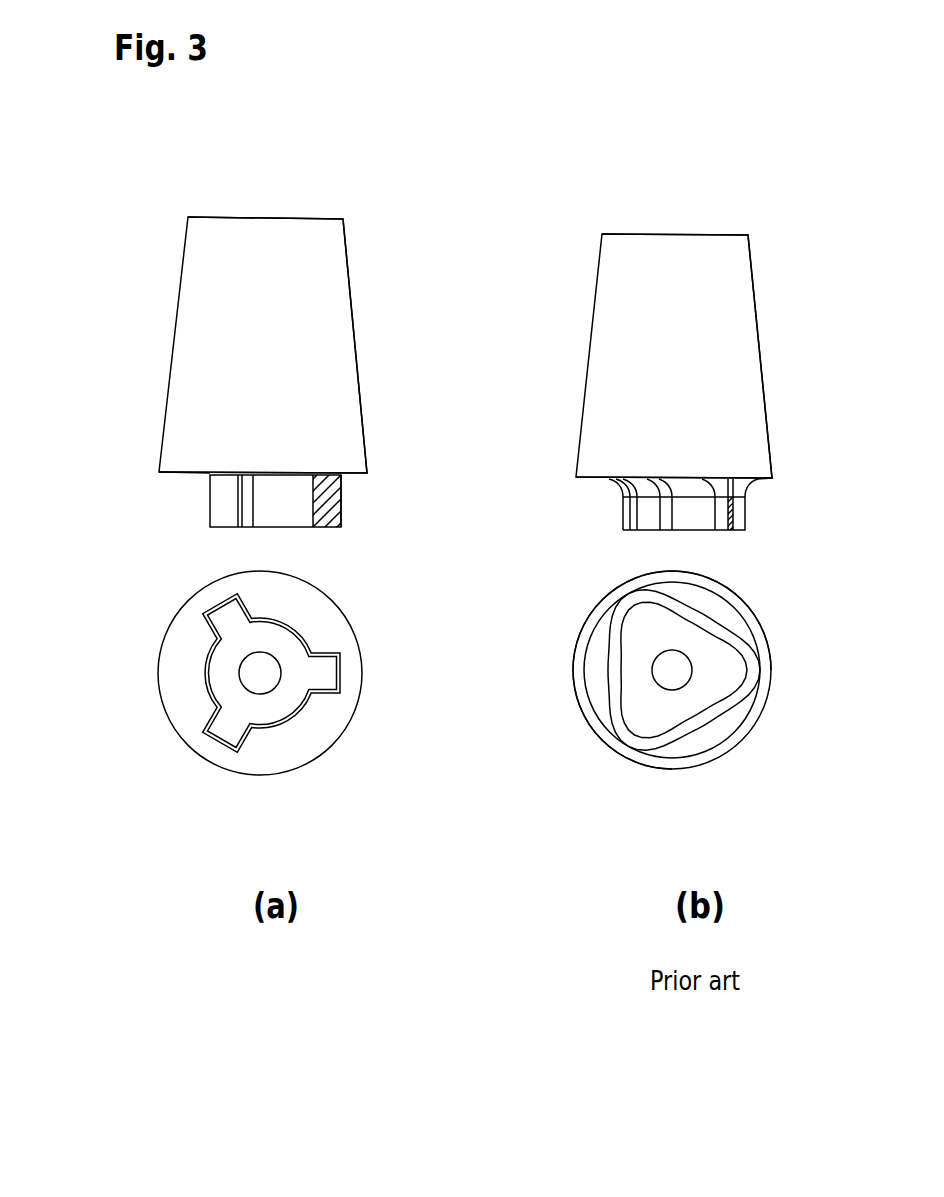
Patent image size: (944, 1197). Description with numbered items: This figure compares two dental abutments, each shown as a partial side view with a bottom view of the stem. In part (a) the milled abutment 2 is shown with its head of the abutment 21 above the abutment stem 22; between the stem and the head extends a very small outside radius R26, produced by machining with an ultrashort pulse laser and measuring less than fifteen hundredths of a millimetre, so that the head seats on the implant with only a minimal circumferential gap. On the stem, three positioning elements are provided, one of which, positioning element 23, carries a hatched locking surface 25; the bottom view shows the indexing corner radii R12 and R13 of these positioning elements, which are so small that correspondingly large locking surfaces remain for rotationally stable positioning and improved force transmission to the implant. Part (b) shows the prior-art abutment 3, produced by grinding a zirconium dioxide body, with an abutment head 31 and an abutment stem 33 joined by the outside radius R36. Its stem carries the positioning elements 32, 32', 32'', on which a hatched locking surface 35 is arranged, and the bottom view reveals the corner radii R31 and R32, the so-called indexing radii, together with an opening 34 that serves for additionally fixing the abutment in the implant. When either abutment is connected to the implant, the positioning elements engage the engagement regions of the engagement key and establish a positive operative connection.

The abutment 2 is at (323, 283).
The head of the abutment 21 is at (345, 371).
The abutment stem 22 is at (210, 484).
The positioning element 23 is at (358, 501).
The locking surface 25 is at (338, 530).
The outside radius R26 is at (207, 481).
The indexing radius R12 is at (210, 617).
The indexing radius R13 is at (200, 660).
The abutment 3 is at (645, 250).
The abutment head 31 is at (735, 343).
The positioning element 32 is at (733, 653).
The abutment stem 33 is at (622, 508).
The opening 34 is at (686, 654).
The locking surface 35 is at (742, 518).
The outside radius R36 is at (760, 490).
The corner radius R31 is at (652, 600).
The corner radius R32 is at (676, 598).
The positioning element 32' is at (622, 746).
The positioning element 32'' is at (589, 620).